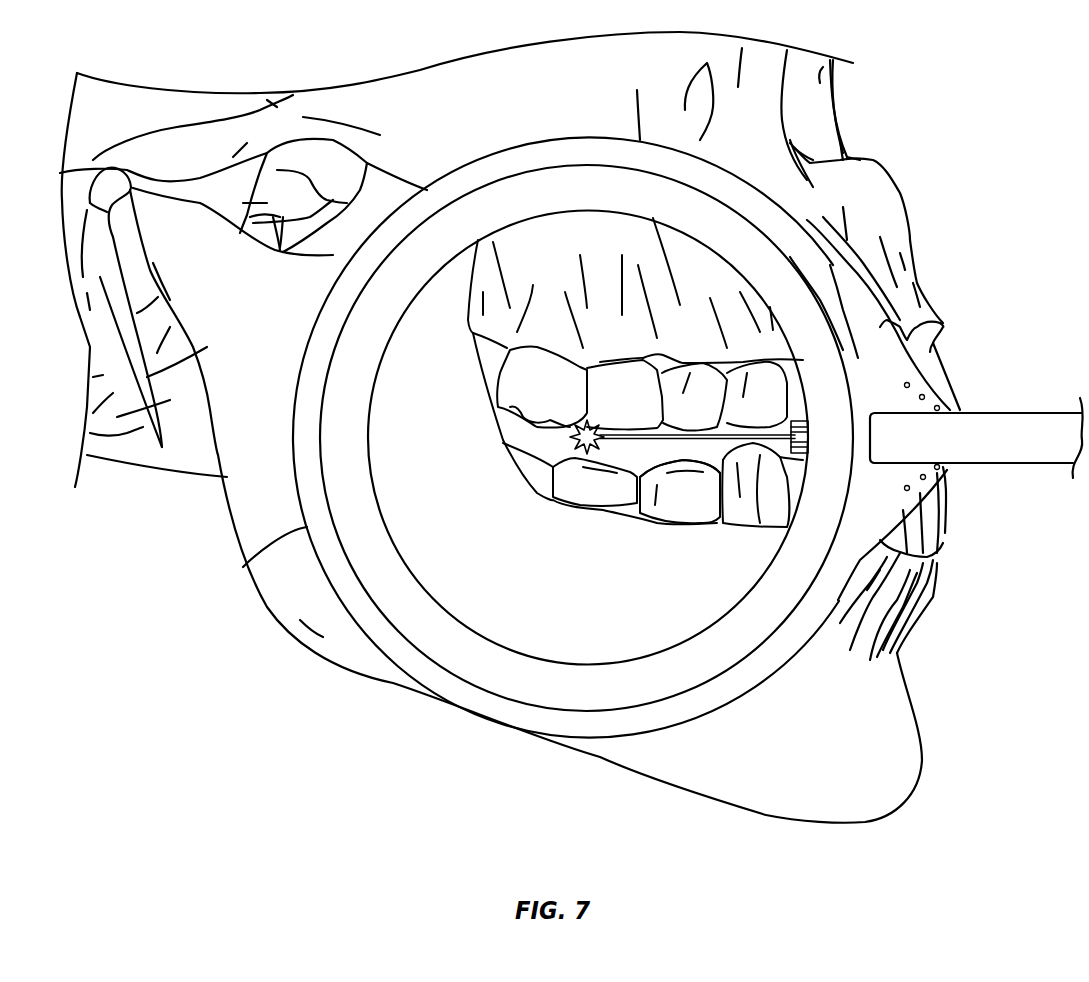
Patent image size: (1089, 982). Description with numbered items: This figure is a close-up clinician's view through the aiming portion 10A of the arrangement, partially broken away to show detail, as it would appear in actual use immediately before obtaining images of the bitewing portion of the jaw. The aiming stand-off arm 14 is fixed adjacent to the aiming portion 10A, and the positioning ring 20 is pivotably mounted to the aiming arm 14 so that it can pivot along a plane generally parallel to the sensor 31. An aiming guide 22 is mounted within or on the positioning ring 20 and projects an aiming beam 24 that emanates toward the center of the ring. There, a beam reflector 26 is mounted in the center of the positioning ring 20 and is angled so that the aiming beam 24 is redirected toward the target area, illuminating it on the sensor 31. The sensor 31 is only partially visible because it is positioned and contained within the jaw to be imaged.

The aiming portion 10A is at (953, 272).
The aiming stand-off arm 14 is at (990, 413).
The positioning ring 20 is at (243, 571).
The aiming guide 22 is at (773, 455).
The aiming beam 24 is at (643, 440).
The beam reflector 26 is at (580, 446).
The sensor 31 is at (683, 453).